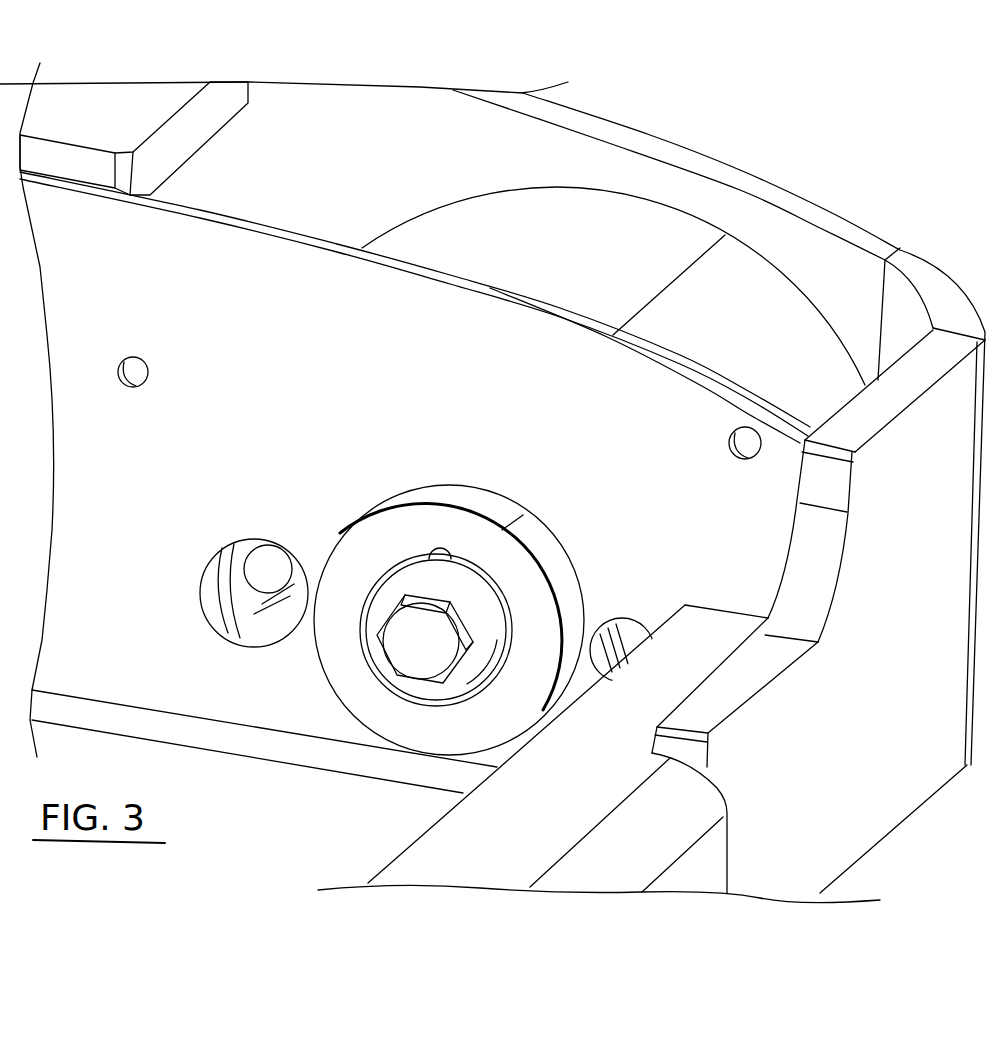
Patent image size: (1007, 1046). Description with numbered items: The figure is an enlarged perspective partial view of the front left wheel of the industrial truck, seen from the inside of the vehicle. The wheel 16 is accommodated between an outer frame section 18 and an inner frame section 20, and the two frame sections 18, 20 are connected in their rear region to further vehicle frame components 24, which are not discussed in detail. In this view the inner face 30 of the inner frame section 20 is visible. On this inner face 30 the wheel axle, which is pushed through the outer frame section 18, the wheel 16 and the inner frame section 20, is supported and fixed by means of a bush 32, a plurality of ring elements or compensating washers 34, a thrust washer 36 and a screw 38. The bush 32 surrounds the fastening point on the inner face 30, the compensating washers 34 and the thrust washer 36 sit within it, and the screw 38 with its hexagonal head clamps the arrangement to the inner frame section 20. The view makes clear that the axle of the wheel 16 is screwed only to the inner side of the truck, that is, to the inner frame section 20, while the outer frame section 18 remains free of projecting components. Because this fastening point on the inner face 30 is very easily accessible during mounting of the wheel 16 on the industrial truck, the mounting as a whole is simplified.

The wheel 16 is at (535, 218).
The outer frame section 18 is at (703, 172).
The inner frame section 20 is at (293, 233).
The vehicle frame components 24 is at (117, 117).
The inner face 30 is at (230, 316).
The bush 32 is at (403, 527).
The compensating washers 34 is at (435, 552).
The thrust washer 36 is at (400, 592).
The screw 38 is at (410, 650).